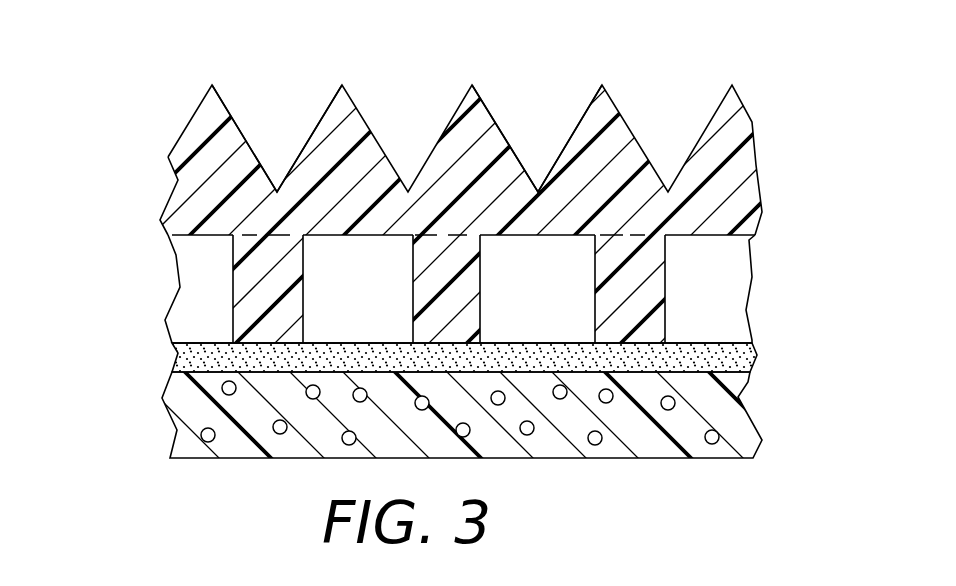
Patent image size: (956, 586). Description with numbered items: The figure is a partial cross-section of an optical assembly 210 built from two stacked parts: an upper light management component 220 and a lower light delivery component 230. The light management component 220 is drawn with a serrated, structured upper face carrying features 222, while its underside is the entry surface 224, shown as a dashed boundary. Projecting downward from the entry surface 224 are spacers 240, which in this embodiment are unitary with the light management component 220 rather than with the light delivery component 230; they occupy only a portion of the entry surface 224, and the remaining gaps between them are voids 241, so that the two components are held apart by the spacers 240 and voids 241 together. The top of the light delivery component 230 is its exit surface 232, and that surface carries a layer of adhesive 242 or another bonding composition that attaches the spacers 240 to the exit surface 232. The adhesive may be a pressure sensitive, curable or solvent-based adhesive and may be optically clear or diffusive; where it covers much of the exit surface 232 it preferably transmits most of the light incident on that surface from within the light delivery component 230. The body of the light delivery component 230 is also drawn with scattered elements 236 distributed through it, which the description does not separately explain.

The optical assembly 210 is at (152, 96).
The light management component 220 is at (710, 162).
The abrasive peaks / ridges 222 is at (318, 125).
The entry surface 224 is at (635, 235).
The light delivery component 230 is at (492, 443).
The exit surface 232 is at (190, 352).
The fibers / particles in backing 236 is at (598, 446).
The spacers 240 is at (433, 317).
The voids 241 is at (381, 291).
The adhesive 242 is at (730, 362).